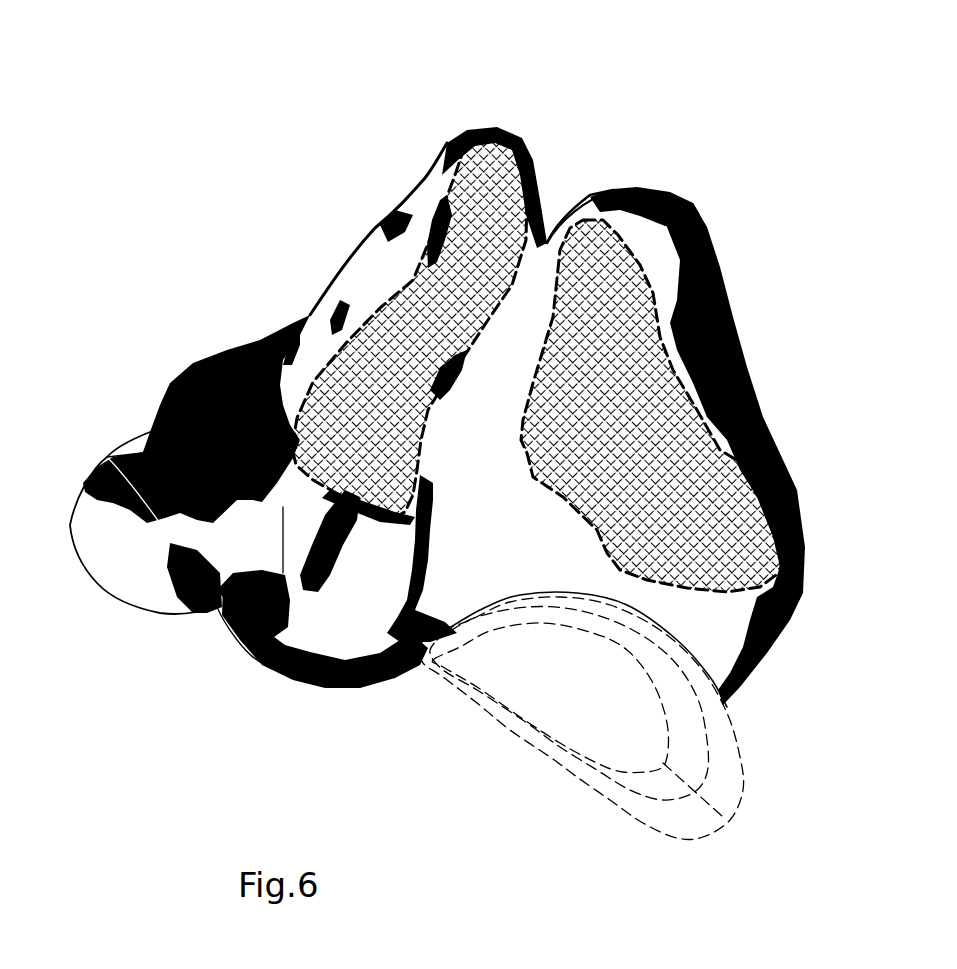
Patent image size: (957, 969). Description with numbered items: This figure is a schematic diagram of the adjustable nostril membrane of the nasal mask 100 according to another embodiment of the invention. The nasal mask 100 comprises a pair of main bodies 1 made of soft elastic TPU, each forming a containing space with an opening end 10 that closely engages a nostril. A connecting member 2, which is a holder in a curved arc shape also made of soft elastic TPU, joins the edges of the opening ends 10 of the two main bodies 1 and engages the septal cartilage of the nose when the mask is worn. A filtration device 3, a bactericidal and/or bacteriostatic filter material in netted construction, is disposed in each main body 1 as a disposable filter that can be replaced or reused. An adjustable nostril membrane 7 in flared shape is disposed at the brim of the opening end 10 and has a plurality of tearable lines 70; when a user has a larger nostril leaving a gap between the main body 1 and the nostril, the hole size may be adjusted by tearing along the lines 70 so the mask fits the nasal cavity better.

The main body 1 is at (465, 130).
The connecting member 2 is at (315, 680).
The filtration device 3 is at (427, 298).
The adjustable nostril membrane 7 is at (723, 752).
The opening end 10 is at (143, 582).
The tearable lines 70 is at (553, 745).
The nasal mask 100 is at (838, 165).